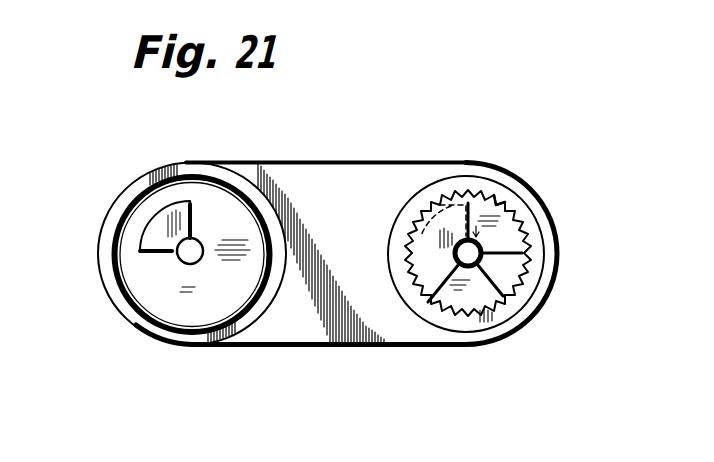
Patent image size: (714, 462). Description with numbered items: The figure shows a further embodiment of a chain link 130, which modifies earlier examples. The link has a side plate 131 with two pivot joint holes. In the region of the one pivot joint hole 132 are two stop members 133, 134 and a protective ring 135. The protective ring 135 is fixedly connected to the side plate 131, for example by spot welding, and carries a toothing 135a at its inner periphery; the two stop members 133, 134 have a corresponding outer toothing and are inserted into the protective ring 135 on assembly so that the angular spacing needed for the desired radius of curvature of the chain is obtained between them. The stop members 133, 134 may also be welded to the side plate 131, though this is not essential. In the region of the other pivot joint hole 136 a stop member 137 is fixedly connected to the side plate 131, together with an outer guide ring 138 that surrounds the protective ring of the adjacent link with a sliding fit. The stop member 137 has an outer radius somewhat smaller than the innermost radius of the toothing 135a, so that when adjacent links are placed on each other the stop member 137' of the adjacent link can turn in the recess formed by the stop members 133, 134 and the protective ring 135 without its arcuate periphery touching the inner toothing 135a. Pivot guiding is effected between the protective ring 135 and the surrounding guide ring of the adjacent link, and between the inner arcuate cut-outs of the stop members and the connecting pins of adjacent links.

The link 130 is at (348, 160).
The side plate 131 is at (345, 209).
The pivot joint hole 132 is at (454, 263).
The stop member 133 is at (487, 202).
The stop member 134 is at (457, 298).
The protective ring 135 is at (535, 256).
The toothing 135a is at (503, 206).
The pivot joint hole 136 is at (189, 253).
The stop member 137 is at (118, 214).
The stop member of the adjacent link 137' is at (441, 173).
The outer guide ring 138 is at (230, 175).